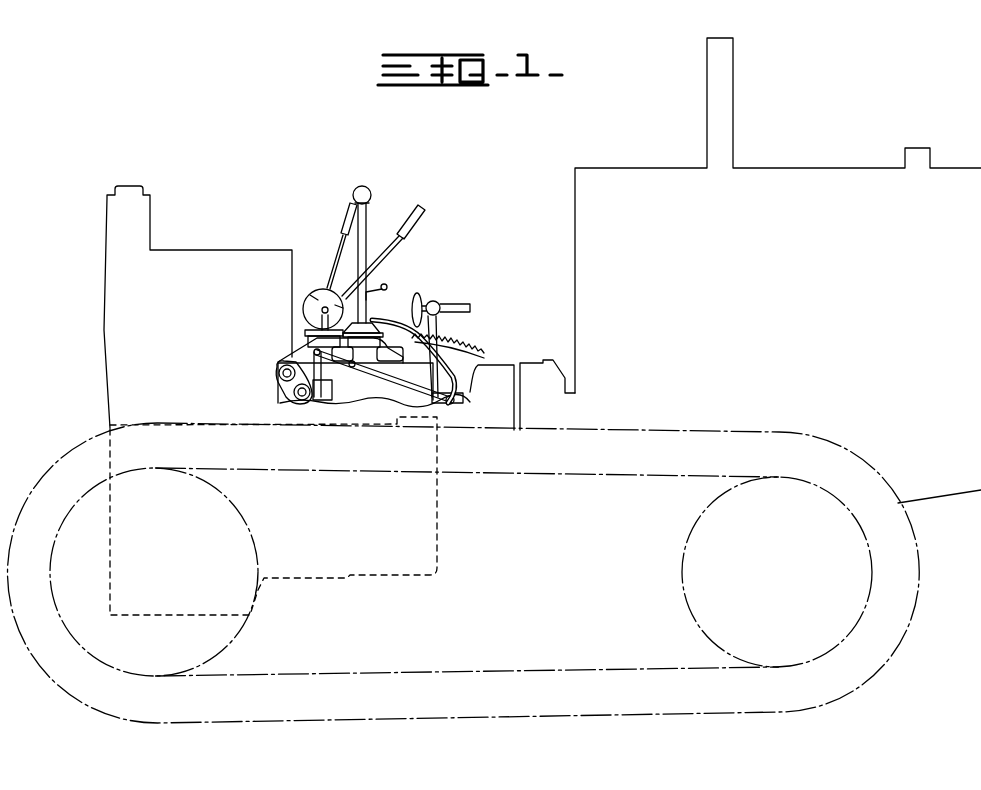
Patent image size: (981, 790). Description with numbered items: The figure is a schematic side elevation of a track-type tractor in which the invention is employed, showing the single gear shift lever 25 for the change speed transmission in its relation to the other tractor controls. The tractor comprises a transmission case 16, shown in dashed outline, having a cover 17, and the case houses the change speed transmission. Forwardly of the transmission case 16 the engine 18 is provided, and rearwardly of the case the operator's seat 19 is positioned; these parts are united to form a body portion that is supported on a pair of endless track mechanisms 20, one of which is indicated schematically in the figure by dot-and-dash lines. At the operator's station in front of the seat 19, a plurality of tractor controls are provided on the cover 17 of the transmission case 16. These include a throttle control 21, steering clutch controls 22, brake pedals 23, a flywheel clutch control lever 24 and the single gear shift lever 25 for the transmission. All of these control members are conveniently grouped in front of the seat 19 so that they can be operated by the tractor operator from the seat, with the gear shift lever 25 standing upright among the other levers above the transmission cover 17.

The transmission case 16 is at (418, 512).
The cover 17 is at (378, 395).
The engine 18 is at (785, 301).
The operator's seat 19 is at (205, 303).
The endless track mechanism 20 is at (912, 555).
The throttle control 21 is at (381, 289).
The steering clutch control 22 is at (343, 232).
The brake pedal 23 is at (423, 293).
The flywheel clutch control lever 24 is at (400, 240).
The gear shift lever 25 is at (397, 223).